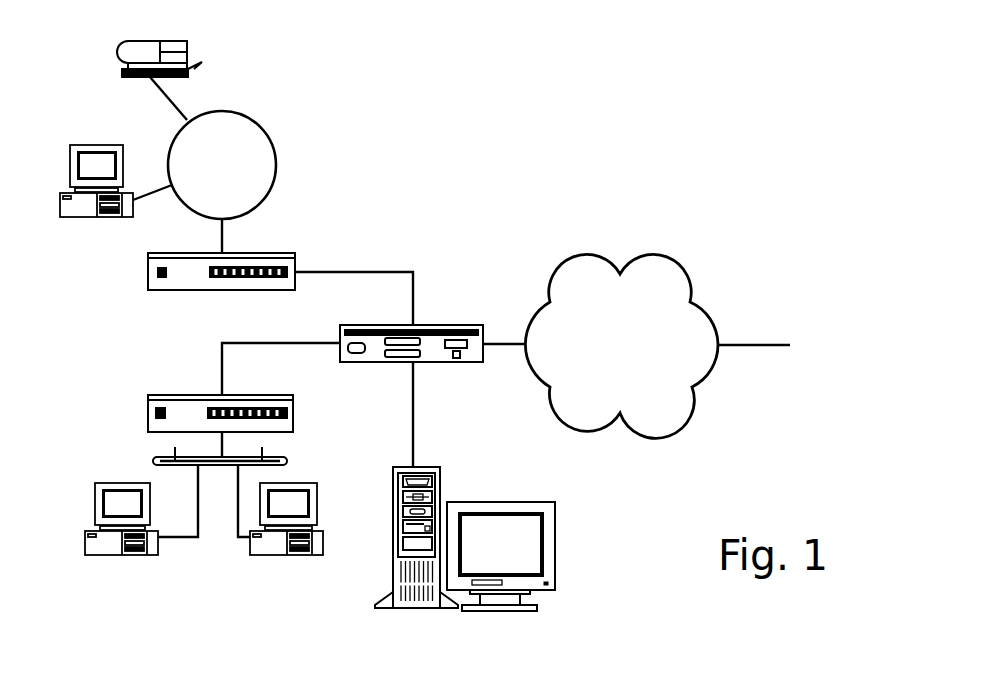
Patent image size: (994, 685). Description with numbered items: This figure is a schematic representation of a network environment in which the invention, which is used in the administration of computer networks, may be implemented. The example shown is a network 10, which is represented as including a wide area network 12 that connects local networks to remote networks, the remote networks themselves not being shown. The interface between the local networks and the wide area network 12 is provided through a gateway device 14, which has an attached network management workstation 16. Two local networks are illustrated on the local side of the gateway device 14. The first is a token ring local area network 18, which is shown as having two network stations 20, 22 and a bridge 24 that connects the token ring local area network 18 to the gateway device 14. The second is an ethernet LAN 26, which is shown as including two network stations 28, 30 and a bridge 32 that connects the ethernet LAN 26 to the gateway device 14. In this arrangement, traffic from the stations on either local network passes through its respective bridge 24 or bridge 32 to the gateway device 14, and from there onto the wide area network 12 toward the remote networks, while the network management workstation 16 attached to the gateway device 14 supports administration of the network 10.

The network 10 is at (500, 250).
The wide area network 12 is at (621, 335).
The gateway device 14 is at (422, 331).
The network management workstation 16 is at (499, 539).
The token ring local area network 18 is at (249, 162).
The network station 20 is at (112, 170).
The network station 22 is at (167, 48).
The bridge 24 is at (245, 260).
The ethernet LAN 26 is at (251, 452).
The network station 28 is at (107, 507).
The network station 30 is at (272, 535).
The bridge 32 is at (254, 411).